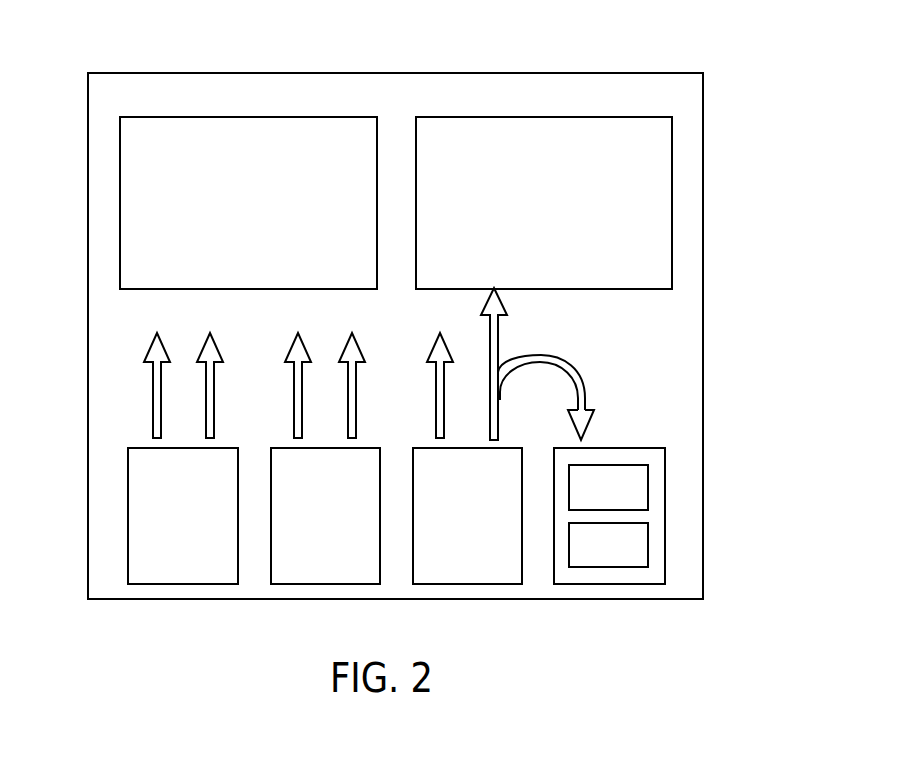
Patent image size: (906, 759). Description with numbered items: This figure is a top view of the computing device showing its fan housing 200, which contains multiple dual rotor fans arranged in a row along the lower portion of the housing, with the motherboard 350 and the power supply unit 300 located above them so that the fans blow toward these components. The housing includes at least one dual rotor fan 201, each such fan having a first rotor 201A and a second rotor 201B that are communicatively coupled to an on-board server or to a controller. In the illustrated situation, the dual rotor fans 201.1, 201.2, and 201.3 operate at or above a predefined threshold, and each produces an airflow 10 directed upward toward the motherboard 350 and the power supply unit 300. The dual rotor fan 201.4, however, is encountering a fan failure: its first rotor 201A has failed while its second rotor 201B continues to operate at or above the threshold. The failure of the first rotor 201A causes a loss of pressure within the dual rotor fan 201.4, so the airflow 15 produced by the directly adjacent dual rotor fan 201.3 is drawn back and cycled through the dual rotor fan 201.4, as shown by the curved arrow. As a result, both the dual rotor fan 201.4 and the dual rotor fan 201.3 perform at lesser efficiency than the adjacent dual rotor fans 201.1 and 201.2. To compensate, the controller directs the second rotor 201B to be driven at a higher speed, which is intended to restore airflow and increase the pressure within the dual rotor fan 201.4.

The airflow 10 is at (348, 410).
The airflow 15 is at (585, 398).
The fan housing 200 is at (703, 364).
The dual rotor fan 201 is at (458, 547).
The dual rotor fan 201.1 is at (218, 530).
The dual rotor fan 201.2 is at (294, 530).
The dual rotor fan 201.3 is at (435, 530).
The dual rotor fan 201.4 is at (671, 516).
The first rotor 201A is at (580, 500).
The second rotor 201B is at (580, 558).
The power supply unit 300 is at (566, 215).
The motherboard 350 is at (270, 215).